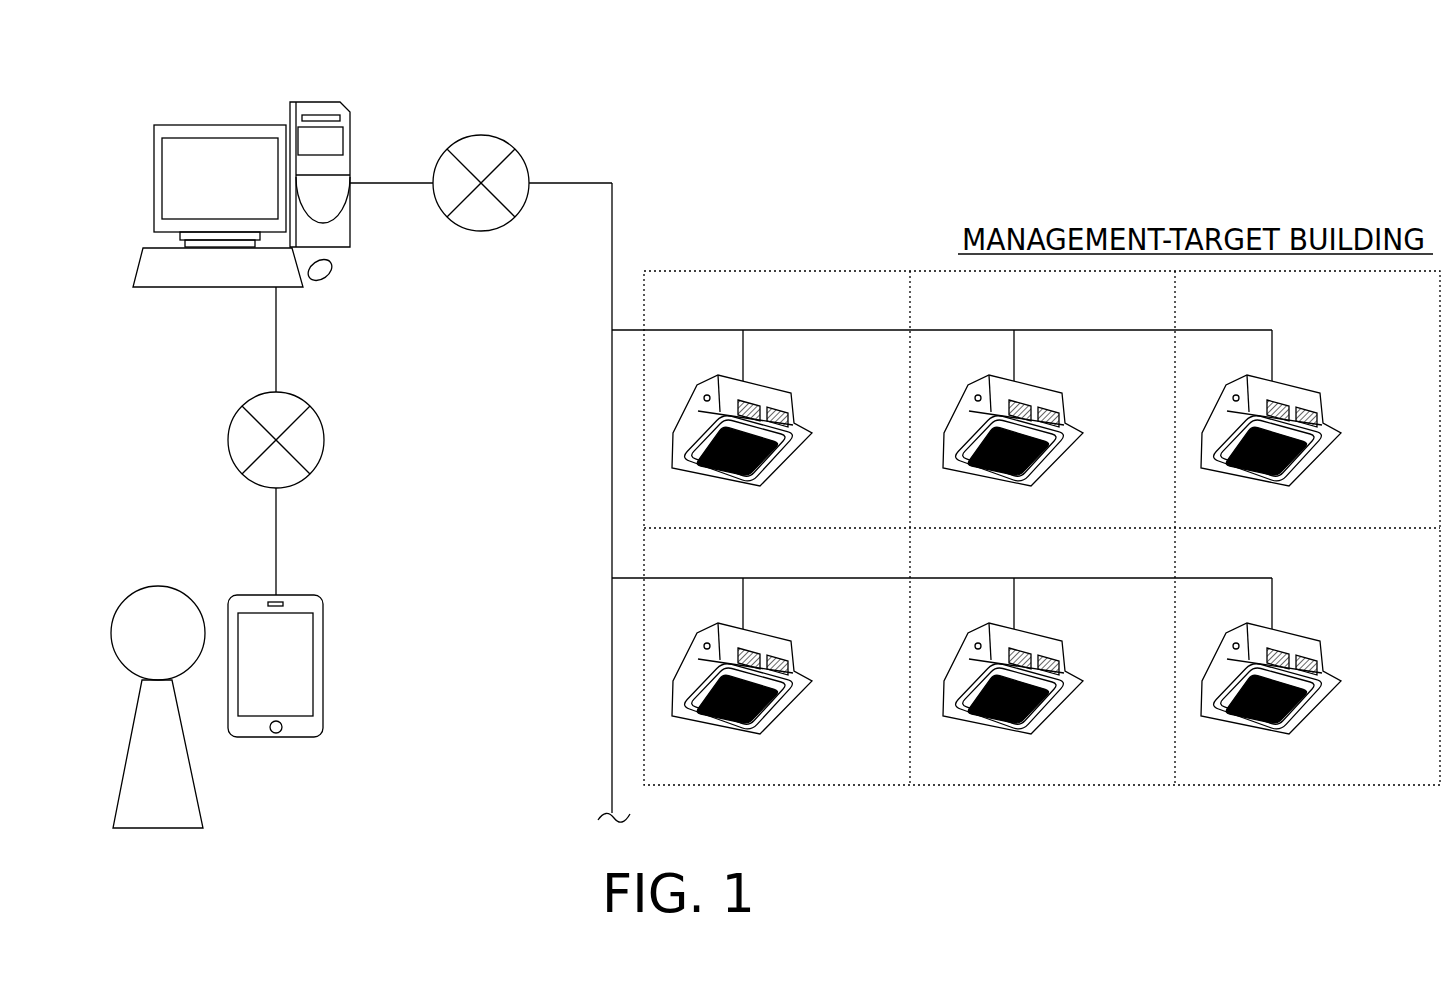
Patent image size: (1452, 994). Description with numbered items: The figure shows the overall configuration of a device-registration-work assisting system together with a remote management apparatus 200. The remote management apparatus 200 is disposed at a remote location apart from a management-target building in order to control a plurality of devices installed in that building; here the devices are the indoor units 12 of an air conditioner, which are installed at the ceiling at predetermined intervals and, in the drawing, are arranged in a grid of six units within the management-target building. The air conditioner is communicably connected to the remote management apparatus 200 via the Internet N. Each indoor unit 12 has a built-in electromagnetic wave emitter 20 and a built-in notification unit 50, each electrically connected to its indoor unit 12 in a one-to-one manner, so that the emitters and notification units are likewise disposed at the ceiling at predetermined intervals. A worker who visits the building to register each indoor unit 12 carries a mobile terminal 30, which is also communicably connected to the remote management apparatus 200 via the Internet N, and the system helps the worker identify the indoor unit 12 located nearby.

The remote management apparatus 200 is at (350, 110).
The Internet N is at (517, 148).
The mobile terminal 30 is at (322, 588).
The indoor unit 12 is at (1034, 573).
The electromagnetic wave emitter 20 is at (1053, 514).
The notification unit 50 is at (1048, 510).